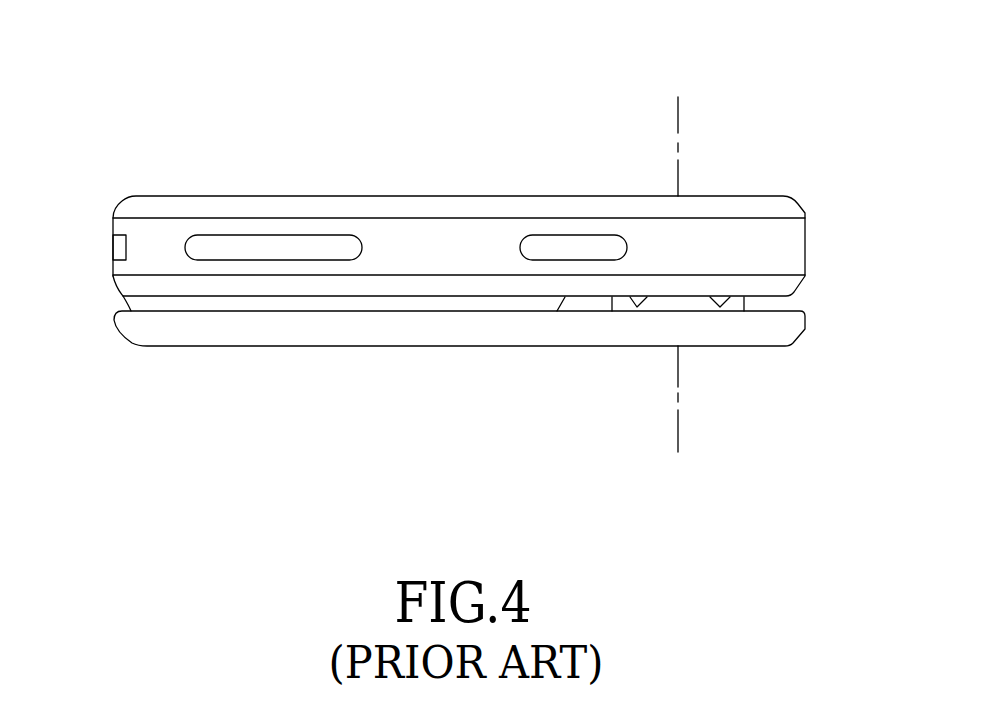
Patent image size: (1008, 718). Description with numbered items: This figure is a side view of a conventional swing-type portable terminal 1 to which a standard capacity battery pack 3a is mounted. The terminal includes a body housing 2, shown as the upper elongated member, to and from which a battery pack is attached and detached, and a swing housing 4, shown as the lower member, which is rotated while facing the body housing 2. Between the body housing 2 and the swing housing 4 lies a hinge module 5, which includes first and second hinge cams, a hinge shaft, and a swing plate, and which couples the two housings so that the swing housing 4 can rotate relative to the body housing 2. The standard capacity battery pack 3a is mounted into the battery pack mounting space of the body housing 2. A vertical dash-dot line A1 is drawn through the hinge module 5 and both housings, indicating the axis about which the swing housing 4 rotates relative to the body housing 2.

The swing-type portable terminal 1 is at (575, 60).
The body housing 2 is at (429, 180).
The standard capacity battery pack 3a is at (138, 304).
The swing housing 4 is at (427, 360).
The hinge module 5 is at (758, 304).
The hinge axis A1 is at (678, 388).